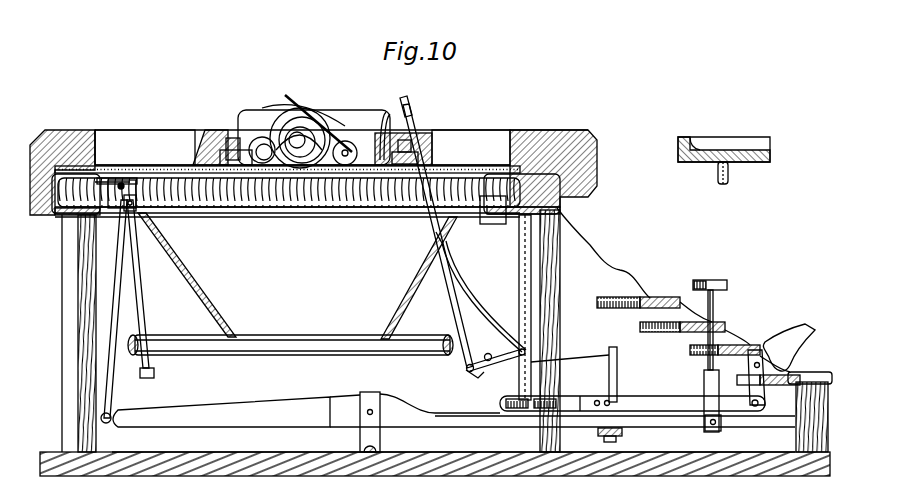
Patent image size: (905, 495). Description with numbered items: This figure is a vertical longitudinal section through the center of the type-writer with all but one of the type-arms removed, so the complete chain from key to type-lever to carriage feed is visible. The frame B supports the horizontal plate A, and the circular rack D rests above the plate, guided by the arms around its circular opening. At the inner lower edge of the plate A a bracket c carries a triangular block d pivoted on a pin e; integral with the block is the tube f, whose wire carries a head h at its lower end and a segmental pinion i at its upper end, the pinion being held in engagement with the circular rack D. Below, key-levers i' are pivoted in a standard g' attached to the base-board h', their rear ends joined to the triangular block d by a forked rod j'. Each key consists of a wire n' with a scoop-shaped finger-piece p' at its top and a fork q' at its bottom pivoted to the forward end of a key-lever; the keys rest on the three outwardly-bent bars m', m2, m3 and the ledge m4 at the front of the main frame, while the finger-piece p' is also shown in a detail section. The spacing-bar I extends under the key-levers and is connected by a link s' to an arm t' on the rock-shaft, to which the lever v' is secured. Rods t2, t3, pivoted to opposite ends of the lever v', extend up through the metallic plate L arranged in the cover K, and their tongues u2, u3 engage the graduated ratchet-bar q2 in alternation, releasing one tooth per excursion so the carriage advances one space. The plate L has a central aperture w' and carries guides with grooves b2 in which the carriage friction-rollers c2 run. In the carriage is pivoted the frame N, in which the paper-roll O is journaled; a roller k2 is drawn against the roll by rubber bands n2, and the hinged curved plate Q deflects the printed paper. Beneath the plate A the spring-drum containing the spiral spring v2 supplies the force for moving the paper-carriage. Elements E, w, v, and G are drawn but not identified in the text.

The frame B is at (72, 383).
The spacing-bar I is at (147, 171).
The groove b2 is at (206, 150).
The friction-rollers c2 is at (226, 142).
The frame N is at (234, 140).
The paper-roll O is at (292, 128).
The roller k2 is at (261, 137).
The curved plate Q is at (303, 103).
The rubber bands n2 is at (345, 141).
The spiral spring v2 is at (383, 130).
The metallic plate L is at (471, 148).
The cover K is at (530, 140).
The circular rack D is at (272, 208).
The central aperture w' is at (312, 200).
The horizontal plate A is at (402, 214).
The end bracket E is at (540, 200).
The pins e is at (108, 183).
The segmental pinion i is at (117, 165).
The triangular block d is at (123, 212).
The tube f is at (140, 292).
The head h is at (156, 375).
The forked rod j' is at (114, 311).
The key-lever i' is at (454, 410).
The base-board h' is at (453, 442).
The standard g' is at (382, 422).
The ratchet-bar q2 is at (414, 104).
The rod t2 is at (452, 336).
The tongue u3 is at (412, 140).
The tongue u2 is at (416, 152).
The bracket c is at (494, 222).
The rod t3 is at (498, 312).
The lever v' is at (492, 346).
The pivot w is at (480, 377).
The arm t' is at (564, 307).
The link s' is at (621, 374).
The slide bar v is at (632, 402).
The outwardly-bent bar m' is at (638, 291).
The outwardly-bent bar m2 is at (719, 326).
The outwardly-bent bar m3 is at (749, 346).
The ledge m4 is at (790, 379).
The finger-piece p' is at (739, 251).
The wire n' is at (725, 328).
The fork q' is at (698, 401).
The hook G is at (800, 336).